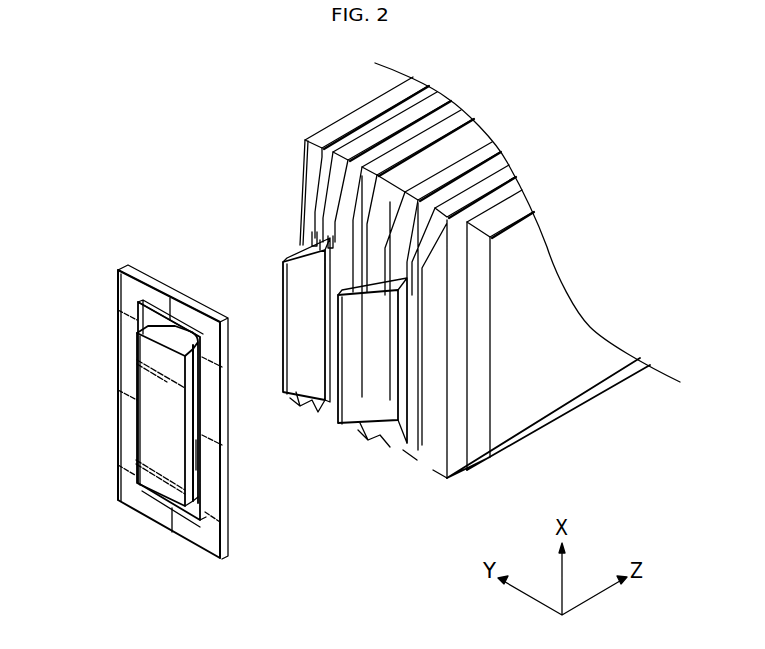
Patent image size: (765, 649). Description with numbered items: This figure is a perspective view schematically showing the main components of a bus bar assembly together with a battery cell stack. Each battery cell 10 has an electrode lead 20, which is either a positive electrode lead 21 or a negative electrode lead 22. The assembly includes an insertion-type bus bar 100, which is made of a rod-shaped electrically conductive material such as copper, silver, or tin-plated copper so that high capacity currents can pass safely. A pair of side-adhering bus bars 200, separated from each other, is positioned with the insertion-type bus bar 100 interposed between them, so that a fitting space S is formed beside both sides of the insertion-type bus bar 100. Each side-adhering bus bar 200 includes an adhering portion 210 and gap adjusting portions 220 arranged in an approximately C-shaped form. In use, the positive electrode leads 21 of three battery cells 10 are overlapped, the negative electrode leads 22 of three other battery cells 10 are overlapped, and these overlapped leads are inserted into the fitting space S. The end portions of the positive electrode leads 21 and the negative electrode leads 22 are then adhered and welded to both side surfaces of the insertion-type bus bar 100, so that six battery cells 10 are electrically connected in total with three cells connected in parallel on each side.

The battery cell 10 is at (375, 108).
The electrode lead 20 is at (375, 486).
The positive electrode lead 21 is at (370, 403).
The negative electrode lead 22 is at (313, 385).
The insertion-type bus bar 100 is at (134, 487).
The side-adhering bus bar 200 is at (106, 348).
The adhering portion 210 is at (125, 421).
The gap adjusting portion 220 is at (150, 297).
The fitting space S is at (200, 460).